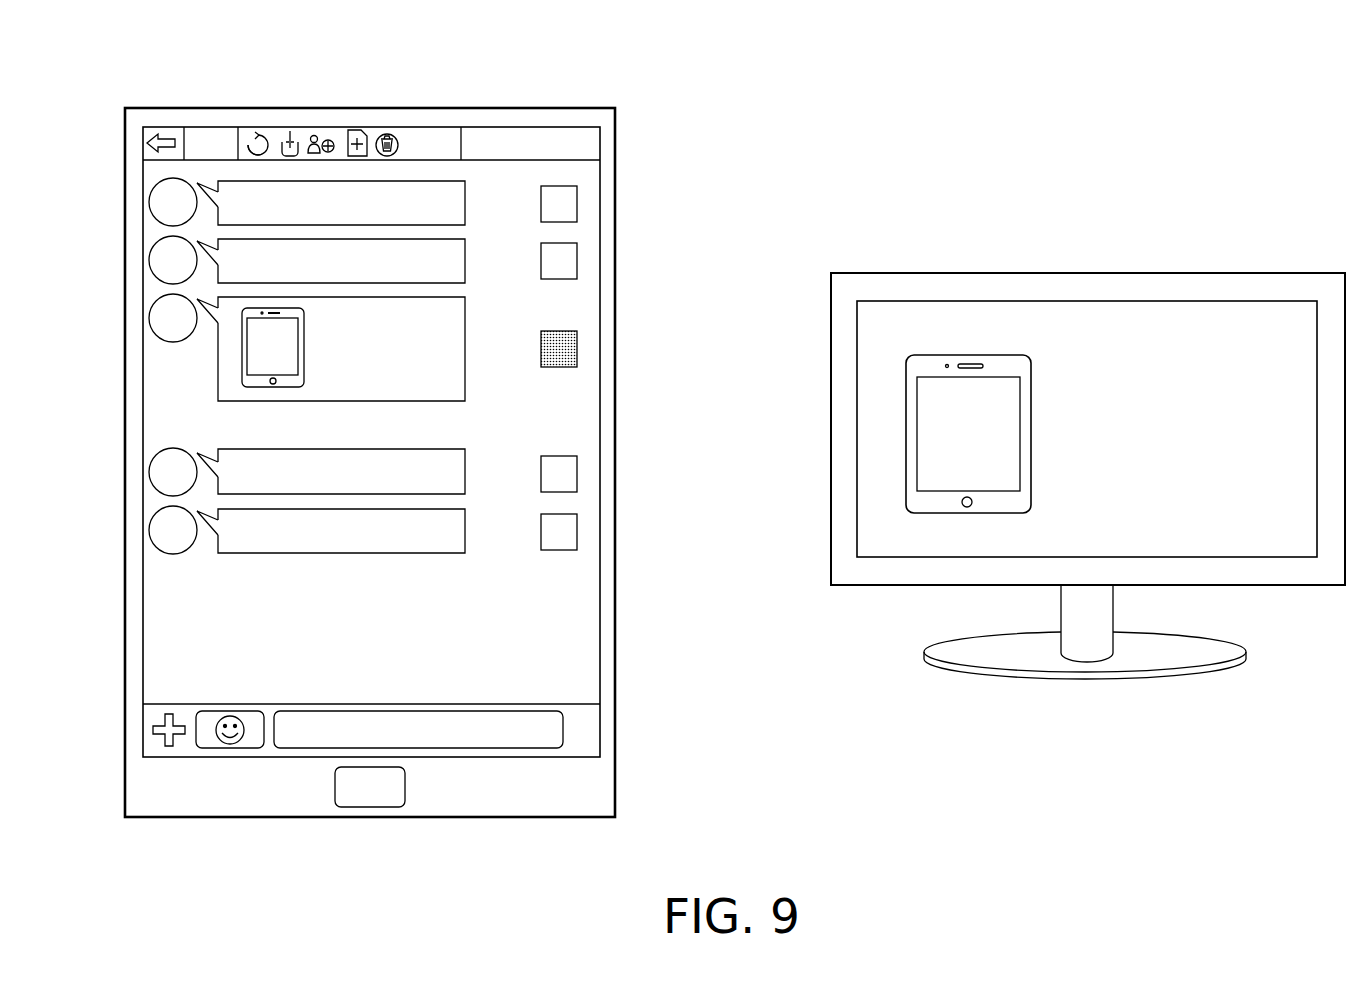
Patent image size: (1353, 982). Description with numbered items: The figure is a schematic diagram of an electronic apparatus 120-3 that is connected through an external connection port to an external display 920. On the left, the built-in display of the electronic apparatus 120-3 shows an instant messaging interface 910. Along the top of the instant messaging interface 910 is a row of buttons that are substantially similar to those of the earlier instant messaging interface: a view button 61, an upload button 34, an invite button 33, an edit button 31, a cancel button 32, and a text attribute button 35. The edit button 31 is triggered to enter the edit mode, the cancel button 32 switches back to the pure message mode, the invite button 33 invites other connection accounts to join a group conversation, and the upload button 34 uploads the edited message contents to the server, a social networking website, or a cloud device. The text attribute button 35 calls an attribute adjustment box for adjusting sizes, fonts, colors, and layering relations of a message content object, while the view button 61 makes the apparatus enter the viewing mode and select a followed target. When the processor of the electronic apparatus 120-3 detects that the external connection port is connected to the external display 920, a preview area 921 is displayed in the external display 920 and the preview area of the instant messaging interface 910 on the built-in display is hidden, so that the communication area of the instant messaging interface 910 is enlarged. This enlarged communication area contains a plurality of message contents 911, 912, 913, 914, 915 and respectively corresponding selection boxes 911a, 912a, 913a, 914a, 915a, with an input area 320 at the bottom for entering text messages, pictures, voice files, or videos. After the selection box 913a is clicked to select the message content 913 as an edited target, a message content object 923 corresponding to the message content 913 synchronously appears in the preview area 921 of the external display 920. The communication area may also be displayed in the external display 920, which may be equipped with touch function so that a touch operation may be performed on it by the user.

The instant messaging interface 910 is at (167, 120).
The view button 61 is at (257, 130).
The upload button 34 is at (293, 130).
The invite button 33 is at (325, 130).
The edit button 31 is at (357, 130).
The cancel button 32 is at (387, 130).
The text attribute button 35 is at (557, 127).
The message content 911 is at (465, 203).
The message content 912 is at (465, 261).
The message content 913 is at (465, 348).
The message content 914 is at (465, 473).
The message content 915 is at (465, 531).
The selection box 911a is at (577, 204).
The selection box 912a is at (577, 262).
The selection box 913a is at (577, 349).
The selection box 914a is at (577, 474).
The selection box 915a is at (577, 532).
The input area 320 is at (580, 732).
The electronic apparatus 120-3 is at (588, 818).
The external display 920 is at (940, 272).
The preview area 921 is at (1177, 322).
The message content object 923 is at (1031, 433).